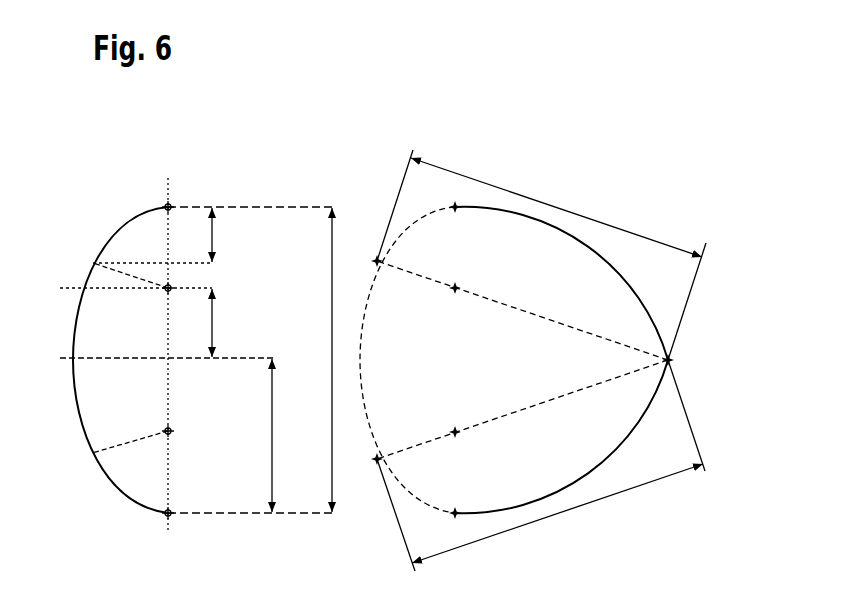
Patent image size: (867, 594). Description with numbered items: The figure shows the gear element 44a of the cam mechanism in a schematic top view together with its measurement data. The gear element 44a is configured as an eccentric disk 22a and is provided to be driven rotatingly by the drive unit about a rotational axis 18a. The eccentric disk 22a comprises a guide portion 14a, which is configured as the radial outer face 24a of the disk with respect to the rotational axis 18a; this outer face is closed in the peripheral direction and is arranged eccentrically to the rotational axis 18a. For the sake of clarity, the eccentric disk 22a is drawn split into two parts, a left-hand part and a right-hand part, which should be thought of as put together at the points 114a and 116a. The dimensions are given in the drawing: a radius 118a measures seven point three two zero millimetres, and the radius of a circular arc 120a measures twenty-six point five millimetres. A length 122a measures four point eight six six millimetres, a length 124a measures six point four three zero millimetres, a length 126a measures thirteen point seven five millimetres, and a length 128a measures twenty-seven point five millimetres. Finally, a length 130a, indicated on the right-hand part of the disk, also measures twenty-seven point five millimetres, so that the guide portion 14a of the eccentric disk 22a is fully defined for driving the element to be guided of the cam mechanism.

The guide portion 14a is at (558, 231).
The radial outer face 24a is at (497, 203).
The eccentric disk 22a is at (561, 308).
The gear element 44a is at (565, 265).
The rotational axis 18a is at (168, 288).
The point 114a is at (168, 207).
The point 116a is at (168, 513).
The radius 118a is at (115, 271).
The circular arc 120a is at (74, 372).
The length 122a is at (212, 235).
The length 124a is at (212, 328).
The length 126a is at (272, 437).
The length 128a is at (332, 305).
The length 130a is at (623, 228).